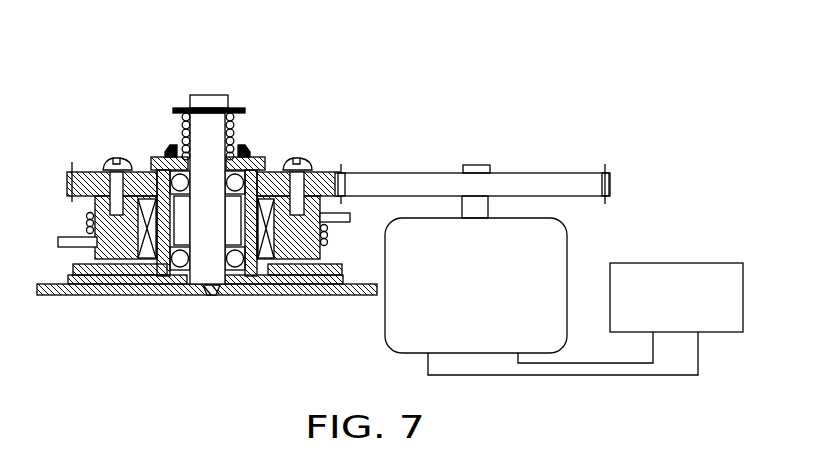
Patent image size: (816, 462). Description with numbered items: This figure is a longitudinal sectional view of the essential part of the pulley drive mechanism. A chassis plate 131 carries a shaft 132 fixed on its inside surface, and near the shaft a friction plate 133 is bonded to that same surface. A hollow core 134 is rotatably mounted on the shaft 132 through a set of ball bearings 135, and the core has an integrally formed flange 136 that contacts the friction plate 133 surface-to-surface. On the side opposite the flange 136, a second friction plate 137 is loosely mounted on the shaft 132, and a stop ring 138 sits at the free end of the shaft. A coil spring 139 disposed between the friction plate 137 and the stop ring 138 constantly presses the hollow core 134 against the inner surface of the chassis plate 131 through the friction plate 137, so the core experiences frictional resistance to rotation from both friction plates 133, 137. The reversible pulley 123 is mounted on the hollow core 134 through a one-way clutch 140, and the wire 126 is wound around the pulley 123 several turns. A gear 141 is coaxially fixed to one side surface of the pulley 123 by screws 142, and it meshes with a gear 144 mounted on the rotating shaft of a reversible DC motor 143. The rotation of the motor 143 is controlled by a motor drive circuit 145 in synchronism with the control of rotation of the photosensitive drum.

The reversible pulley 123 is at (96, 250).
The wire 126 is at (87, 229).
The chassis plate 131 is at (124, 296).
The shaft 132 is at (205, 94).
The friction plate 133 is at (345, 275).
The hollow core 134 is at (258, 190).
The bearings 135 is at (152, 160).
The flange 136 is at (68, 275).
The friction plate 137 is at (167, 145).
The stop ring 138 is at (180, 108).
The coil spring 139 is at (234, 125).
The one-way clutch 140 is at (273, 296).
The gear 141 is at (68, 181).
The screws 142 is at (106, 163).
The reversible motor 143 is at (553, 250).
The gear 144 is at (427, 183).
The motor drive circuit 145 is at (692, 272).